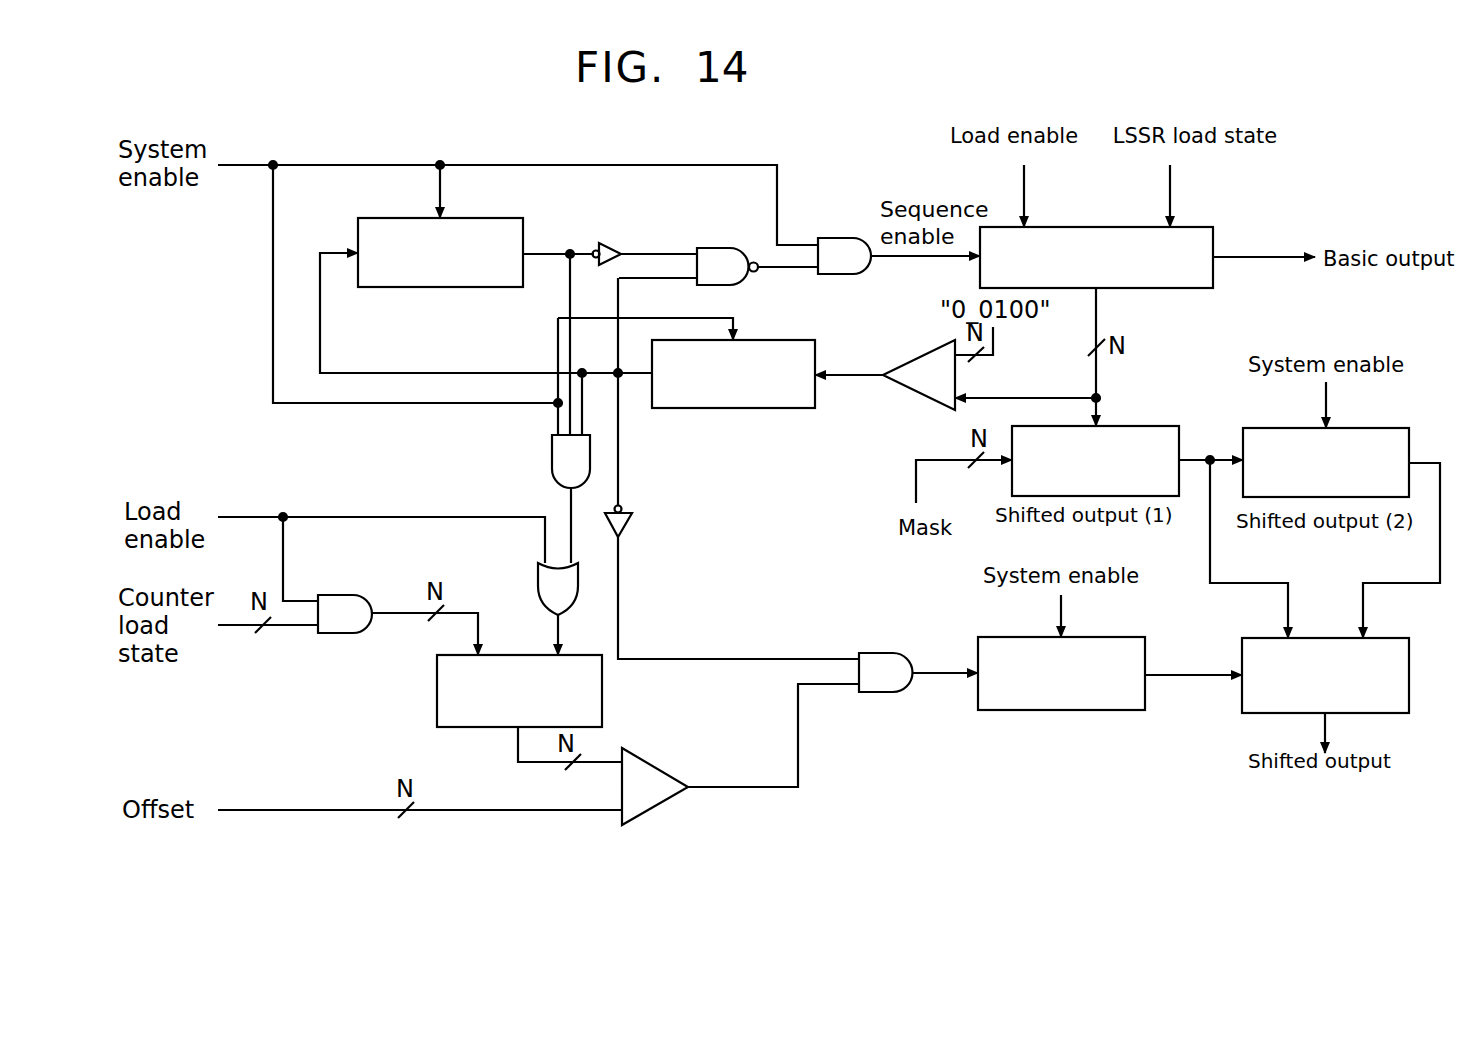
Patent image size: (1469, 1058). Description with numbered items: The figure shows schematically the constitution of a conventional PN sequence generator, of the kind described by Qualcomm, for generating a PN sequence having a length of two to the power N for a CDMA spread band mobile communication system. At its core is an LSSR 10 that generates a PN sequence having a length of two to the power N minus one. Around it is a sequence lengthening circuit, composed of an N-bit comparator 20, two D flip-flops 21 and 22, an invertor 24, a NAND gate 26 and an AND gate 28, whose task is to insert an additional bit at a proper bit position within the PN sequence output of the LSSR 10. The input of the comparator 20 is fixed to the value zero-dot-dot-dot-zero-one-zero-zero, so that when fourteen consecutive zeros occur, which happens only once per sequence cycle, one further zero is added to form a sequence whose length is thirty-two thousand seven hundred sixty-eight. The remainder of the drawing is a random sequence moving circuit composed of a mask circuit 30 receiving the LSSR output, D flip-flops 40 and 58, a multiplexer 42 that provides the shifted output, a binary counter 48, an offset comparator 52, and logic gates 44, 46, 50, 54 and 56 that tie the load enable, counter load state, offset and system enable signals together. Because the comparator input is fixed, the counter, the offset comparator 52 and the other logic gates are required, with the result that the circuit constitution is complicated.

The LSSR 10 is at (1179, 227).
The N-bit comparator 20 is at (900, 356).
The D flip-flop 21 is at (768, 344).
The D flip-flop 22 is at (460, 224).
The invertor 24 is at (600, 247).
The NAND gate 26 is at (700, 250).
The AND gate 28 is at (826, 236).
The mask circuit 30 is at (1126, 426).
The D flip-flop 40 is at (1366, 430).
The multiplexer 42 is at (1378, 638).
The AND gate 44 is at (552, 459).
The OR gate 46 is at (538, 582).
The binary counter 48 is at (602, 701).
The AND gate 50 is at (328, 597).
The comparator 52 is at (665, 764).
The AND gate 54 is at (870, 648).
The invertor 56 is at (630, 522).
The D flip-flop 58 is at (1120, 638).